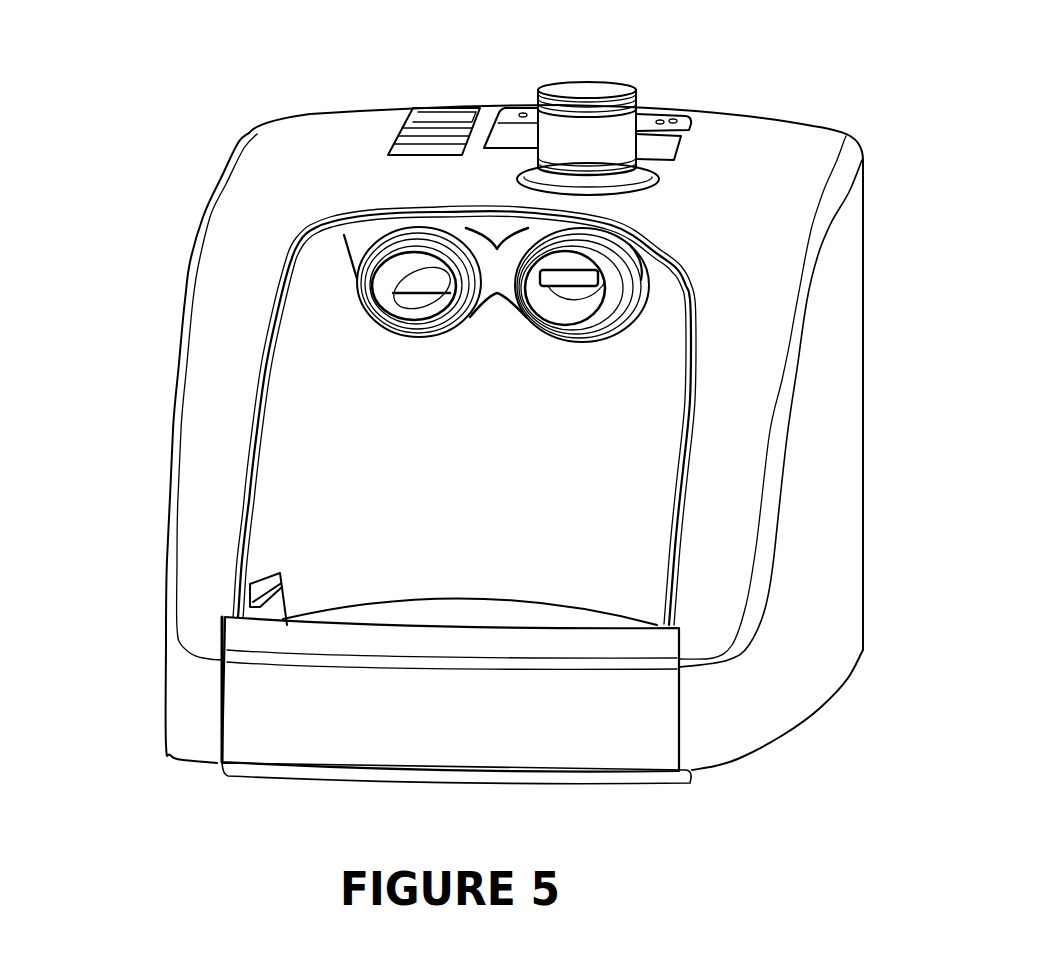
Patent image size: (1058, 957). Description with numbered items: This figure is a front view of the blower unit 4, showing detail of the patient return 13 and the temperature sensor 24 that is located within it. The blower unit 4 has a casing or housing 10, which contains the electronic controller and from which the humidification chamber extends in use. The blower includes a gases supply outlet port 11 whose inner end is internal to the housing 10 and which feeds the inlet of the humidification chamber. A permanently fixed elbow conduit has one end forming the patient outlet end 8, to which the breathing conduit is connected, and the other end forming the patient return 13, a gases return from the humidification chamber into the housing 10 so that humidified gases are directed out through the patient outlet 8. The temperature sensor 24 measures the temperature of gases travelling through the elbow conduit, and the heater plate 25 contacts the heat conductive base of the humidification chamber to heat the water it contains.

The blower unit 4 is at (503, 392).
The patient outlet end 8 is at (597, 120).
The housing 10 is at (262, 150).
The gases supply outlet port 11 is at (360, 294).
The patient return 13 is at (545, 311).
The temperature sensor 24 is at (578, 292).
The heater plate 25 is at (358, 621).